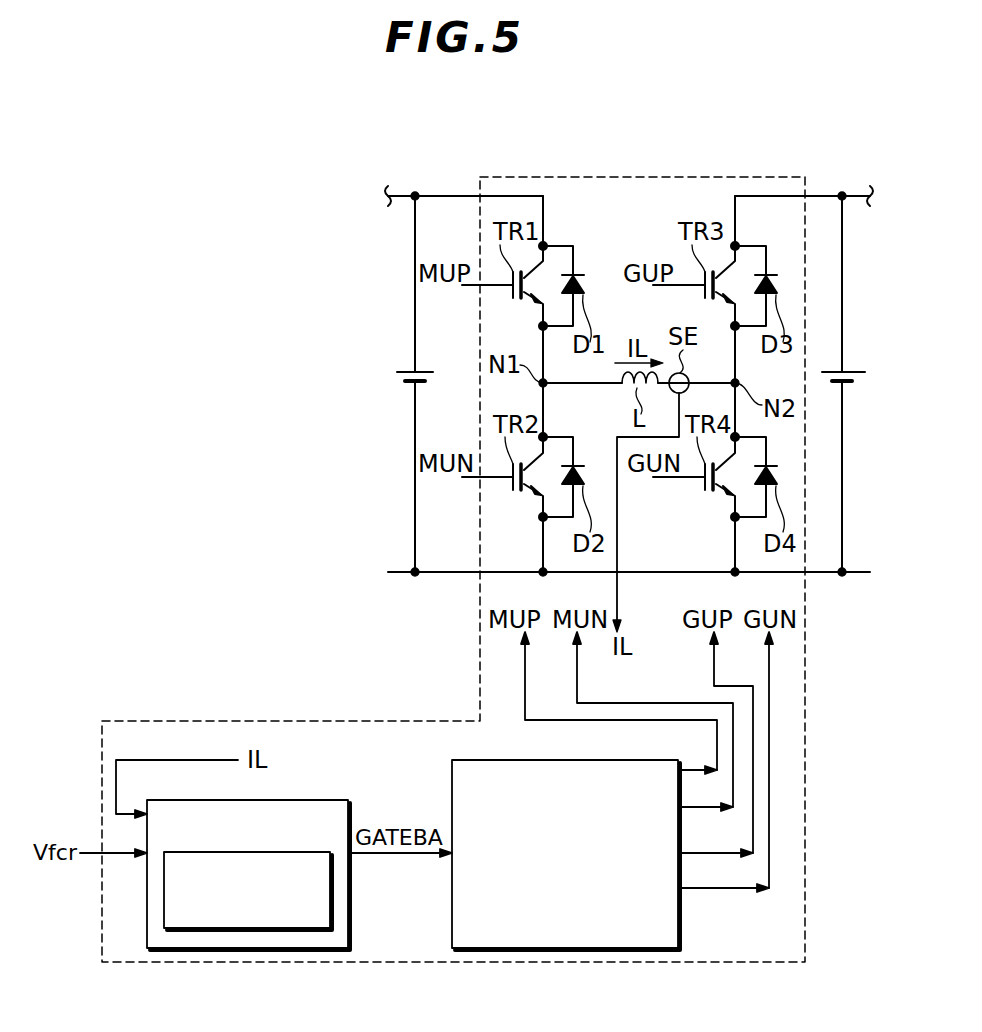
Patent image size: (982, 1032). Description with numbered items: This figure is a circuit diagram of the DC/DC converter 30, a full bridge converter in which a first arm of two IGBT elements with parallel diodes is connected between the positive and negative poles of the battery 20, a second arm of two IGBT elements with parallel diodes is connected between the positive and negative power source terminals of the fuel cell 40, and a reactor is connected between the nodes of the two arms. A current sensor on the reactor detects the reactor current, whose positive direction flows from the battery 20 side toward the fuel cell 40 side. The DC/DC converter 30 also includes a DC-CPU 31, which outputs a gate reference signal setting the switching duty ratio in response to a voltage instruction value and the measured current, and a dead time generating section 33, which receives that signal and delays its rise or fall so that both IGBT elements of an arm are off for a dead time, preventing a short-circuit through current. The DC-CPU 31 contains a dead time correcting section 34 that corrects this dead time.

The battery 20 is at (417, 372).
The fuel cell 40 is at (843, 372).
The DC/DC converter 30 is at (810, 800).
The DC-CPU 31 is at (351, 888).
The dead time generating section 33 is at (553, 950).
The dead time correcting section 34 is at (230, 930).